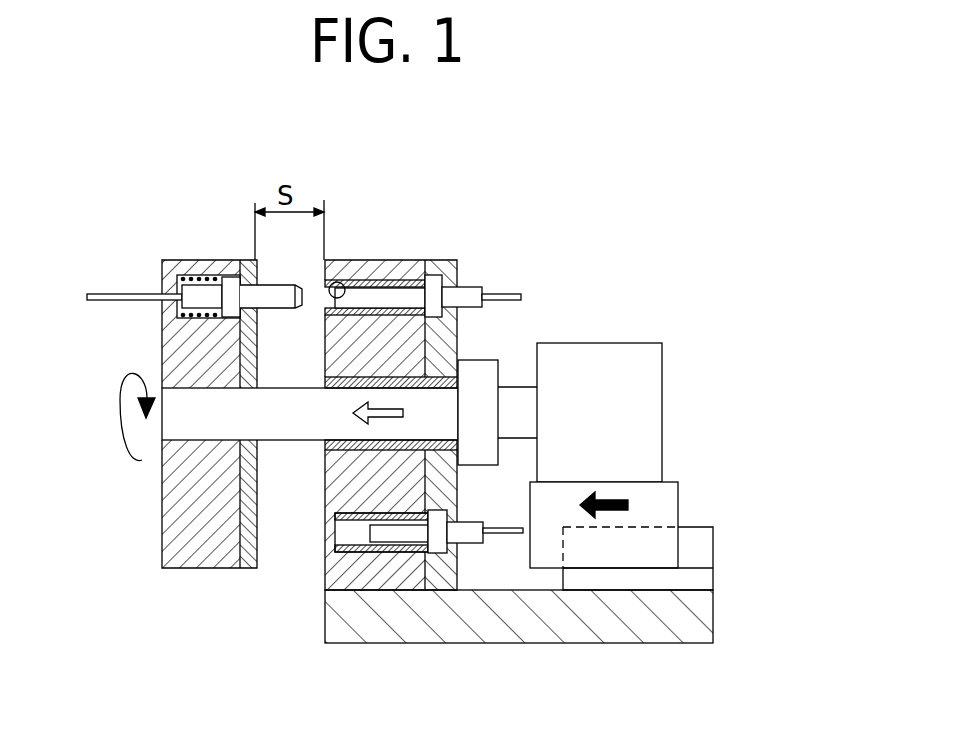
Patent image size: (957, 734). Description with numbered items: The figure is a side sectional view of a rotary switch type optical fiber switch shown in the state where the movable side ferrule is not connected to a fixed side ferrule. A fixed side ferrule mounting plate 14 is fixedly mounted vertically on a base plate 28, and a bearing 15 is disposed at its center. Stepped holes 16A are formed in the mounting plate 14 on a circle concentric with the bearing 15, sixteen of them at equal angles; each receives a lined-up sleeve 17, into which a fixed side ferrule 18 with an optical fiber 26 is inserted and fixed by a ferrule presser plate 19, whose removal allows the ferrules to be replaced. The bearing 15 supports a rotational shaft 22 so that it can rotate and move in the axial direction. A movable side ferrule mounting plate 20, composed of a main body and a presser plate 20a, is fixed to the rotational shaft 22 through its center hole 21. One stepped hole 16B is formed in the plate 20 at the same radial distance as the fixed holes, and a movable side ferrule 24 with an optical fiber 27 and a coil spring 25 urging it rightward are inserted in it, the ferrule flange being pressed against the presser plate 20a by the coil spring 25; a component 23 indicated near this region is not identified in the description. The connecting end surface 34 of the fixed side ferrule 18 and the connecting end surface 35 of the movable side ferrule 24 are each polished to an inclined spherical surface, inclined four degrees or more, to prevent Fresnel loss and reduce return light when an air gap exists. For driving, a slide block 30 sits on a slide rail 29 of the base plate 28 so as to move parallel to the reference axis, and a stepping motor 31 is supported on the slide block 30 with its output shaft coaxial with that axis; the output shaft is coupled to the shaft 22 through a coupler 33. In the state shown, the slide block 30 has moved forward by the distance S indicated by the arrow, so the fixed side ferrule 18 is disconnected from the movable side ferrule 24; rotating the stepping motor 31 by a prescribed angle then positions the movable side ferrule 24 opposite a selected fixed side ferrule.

The fixed side ferrule mounting plate 14 is at (327, 573).
The bearing 15 is at (325, 460).
The stepped holes 16A is at (409, 391).
The stepped hole 16B is at (190, 410).
The lined-up sleeve 17 is at (385, 280).
The fixed side ferrule 18 is at (402, 295).
The ferrule presser plate 19 is at (455, 261).
The movable side ferrule mounting plate 20 is at (188, 553).
The presser plate 20a is at (252, 560).
The center hole 21 is at (197, 432).
The rotational shaft 22 is at (195, 407).
The pin unit 23 is at (170, 248).
The movable side ferrule 24 is at (273, 300).
The coil spring 25 is at (205, 278).
The optical fiber 26 is at (497, 292).
The optical fiber 27 is at (100, 293).
The base plate 28 is at (585, 630).
The slide rail 29 is at (713, 553).
The slide block 30 is at (670, 495).
The stepping motor 31 is at (643, 412).
The coupler 33 is at (480, 385).
The connecting end surface 34 is at (363, 288).
The connecting end surface 35 is at (298, 285).